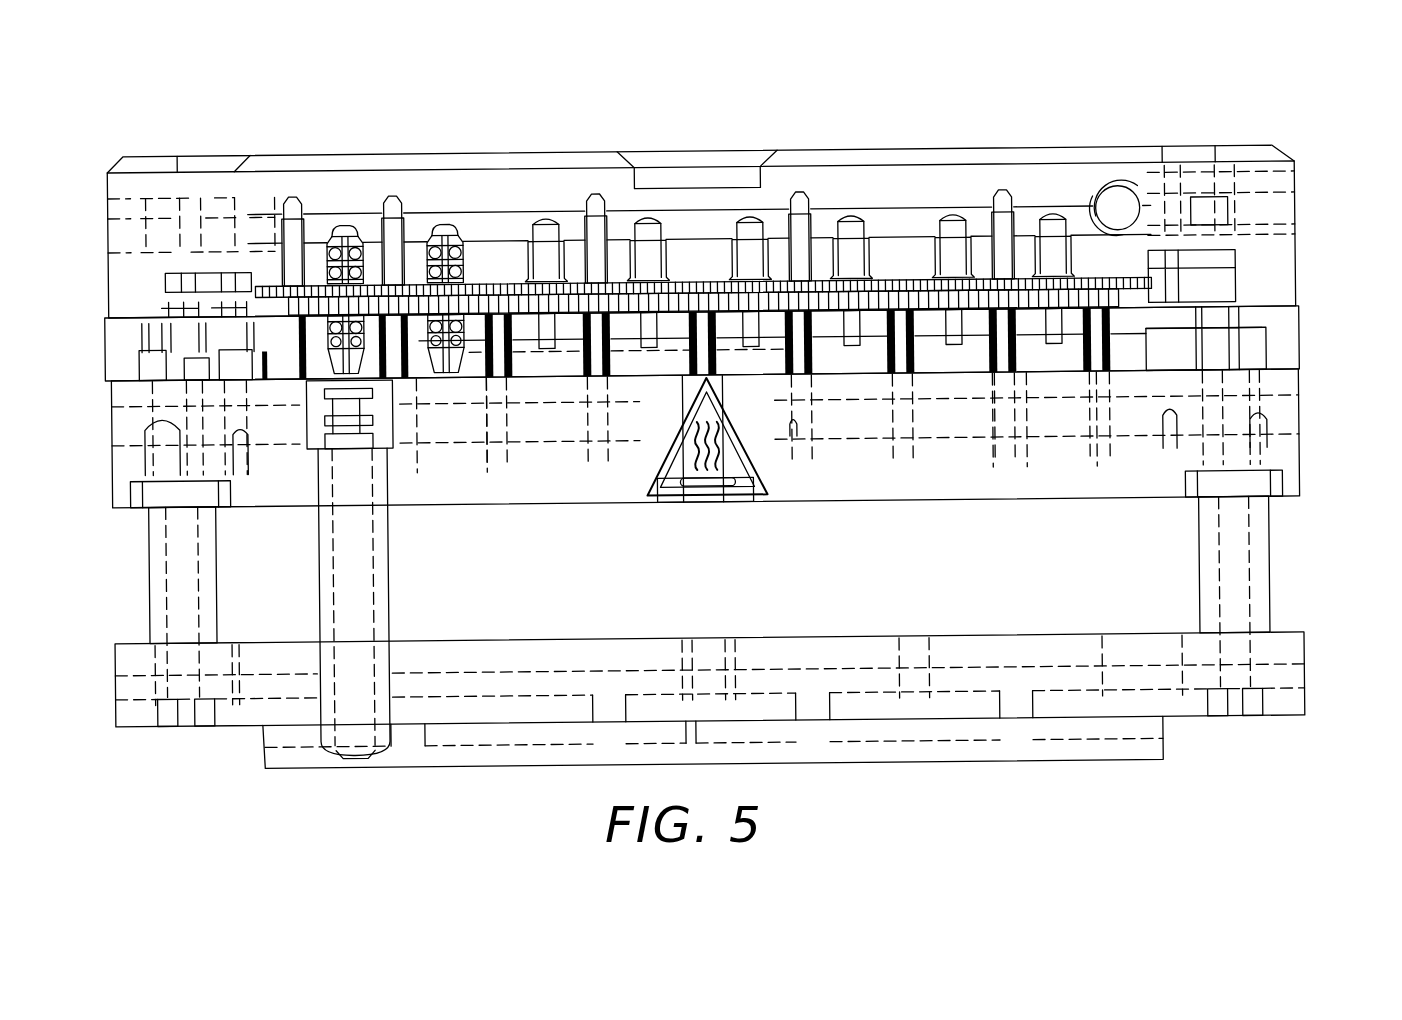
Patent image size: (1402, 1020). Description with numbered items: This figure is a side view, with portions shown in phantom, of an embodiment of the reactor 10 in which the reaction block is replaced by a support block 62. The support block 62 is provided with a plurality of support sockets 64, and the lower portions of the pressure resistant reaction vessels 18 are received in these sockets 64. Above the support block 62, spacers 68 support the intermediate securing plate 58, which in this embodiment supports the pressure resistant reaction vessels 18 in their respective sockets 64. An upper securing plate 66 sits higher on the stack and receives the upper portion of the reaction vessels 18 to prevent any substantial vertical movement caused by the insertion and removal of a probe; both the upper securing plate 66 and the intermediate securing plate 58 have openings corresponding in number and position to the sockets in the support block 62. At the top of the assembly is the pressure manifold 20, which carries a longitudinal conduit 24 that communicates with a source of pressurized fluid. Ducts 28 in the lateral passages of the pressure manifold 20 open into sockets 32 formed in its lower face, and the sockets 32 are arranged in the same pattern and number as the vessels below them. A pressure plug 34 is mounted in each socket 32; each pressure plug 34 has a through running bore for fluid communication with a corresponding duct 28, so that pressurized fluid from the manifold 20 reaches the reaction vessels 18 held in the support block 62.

The reactor 10 is at (232, 126).
The pressure manifold 20 is at (435, 158).
The longitudinal conduit 24 is at (940, 205).
The ducts 28 is at (655, 248).
The sockets 32 is at (570, 323).
The pressure plug 34 is at (377, 253).
The upper securing plate 66 is at (104, 348).
The intermediate securing plate 58 is at (112, 435).
The spacers 68 is at (148, 568).
The pressure resistant reaction vessels 18 is at (390, 600).
The support block 62 is at (113, 705).
The support sockets 64 is at (490, 710).